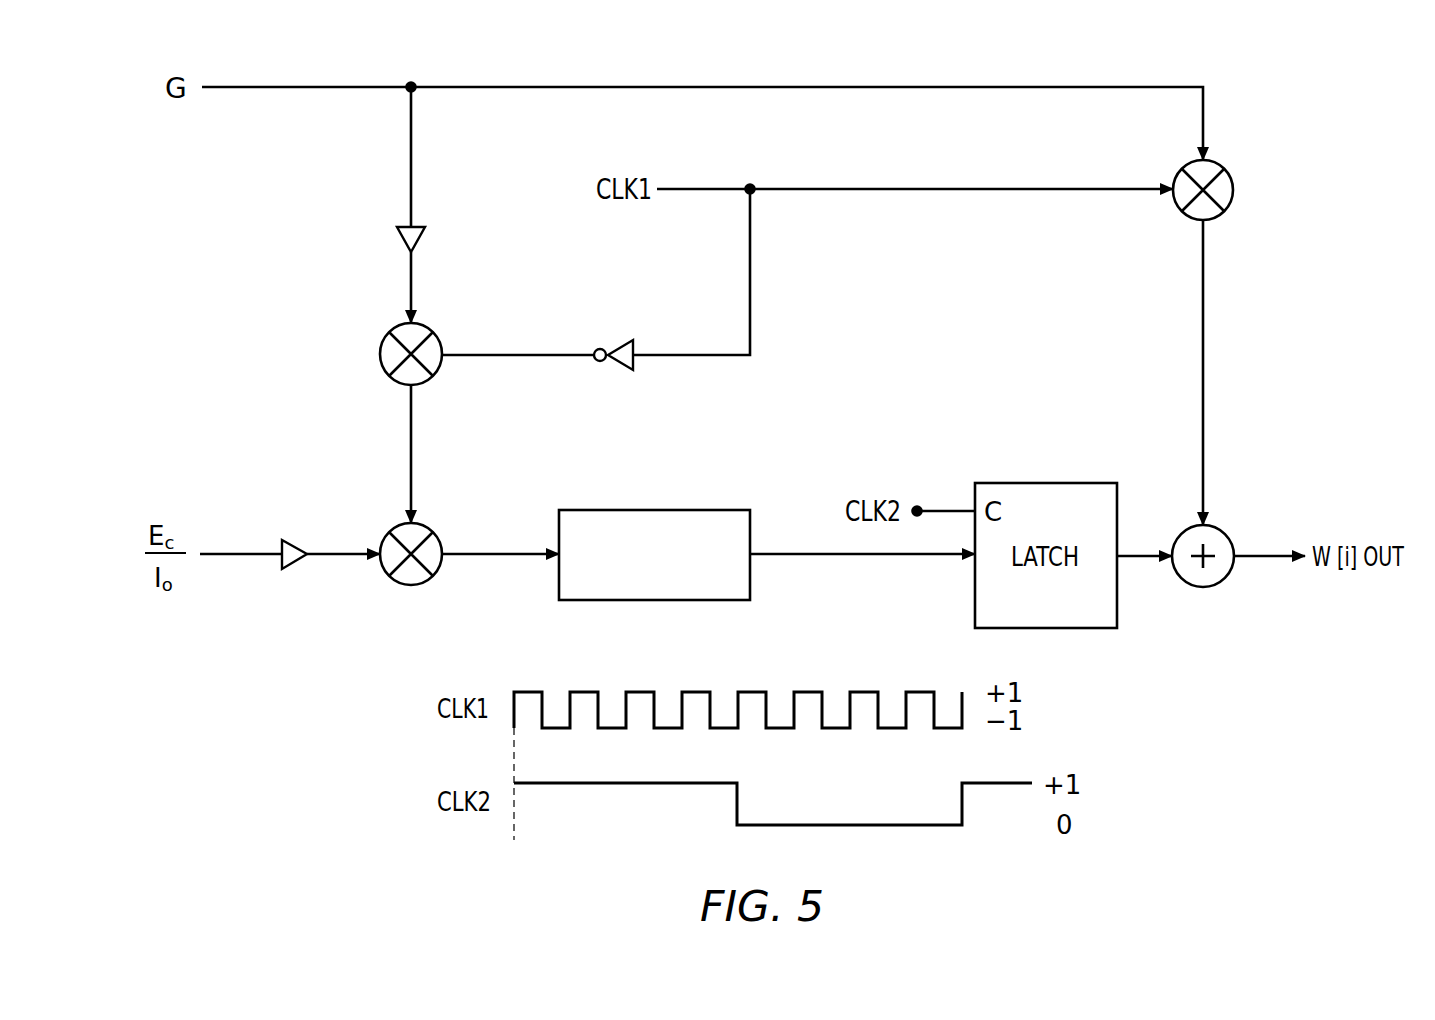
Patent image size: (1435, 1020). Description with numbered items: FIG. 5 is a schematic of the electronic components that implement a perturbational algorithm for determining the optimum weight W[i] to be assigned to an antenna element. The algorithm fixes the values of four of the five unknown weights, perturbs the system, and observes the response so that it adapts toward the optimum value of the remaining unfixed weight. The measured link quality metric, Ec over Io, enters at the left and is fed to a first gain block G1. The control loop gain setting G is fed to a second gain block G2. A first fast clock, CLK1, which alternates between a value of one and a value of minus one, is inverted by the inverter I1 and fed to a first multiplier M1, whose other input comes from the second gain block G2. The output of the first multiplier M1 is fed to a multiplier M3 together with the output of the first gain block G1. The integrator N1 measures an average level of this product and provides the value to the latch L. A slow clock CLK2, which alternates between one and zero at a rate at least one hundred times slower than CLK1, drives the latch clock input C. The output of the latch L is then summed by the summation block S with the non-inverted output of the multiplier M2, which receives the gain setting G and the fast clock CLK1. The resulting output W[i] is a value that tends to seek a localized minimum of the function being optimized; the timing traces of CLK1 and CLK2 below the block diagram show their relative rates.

The first gain block G1 is at (297, 540).
The second gain block G2 is at (428, 243).
The first multiplier M1 is at (430, 332).
The multiplier M2 is at (1224, 169).
The multiplier M3 is at (430, 532).
The inverter I1 is at (619, 342).
The integrator N1 is at (683, 510).
The latch L is at (1047, 483).
The summation block S is at (1226, 536).